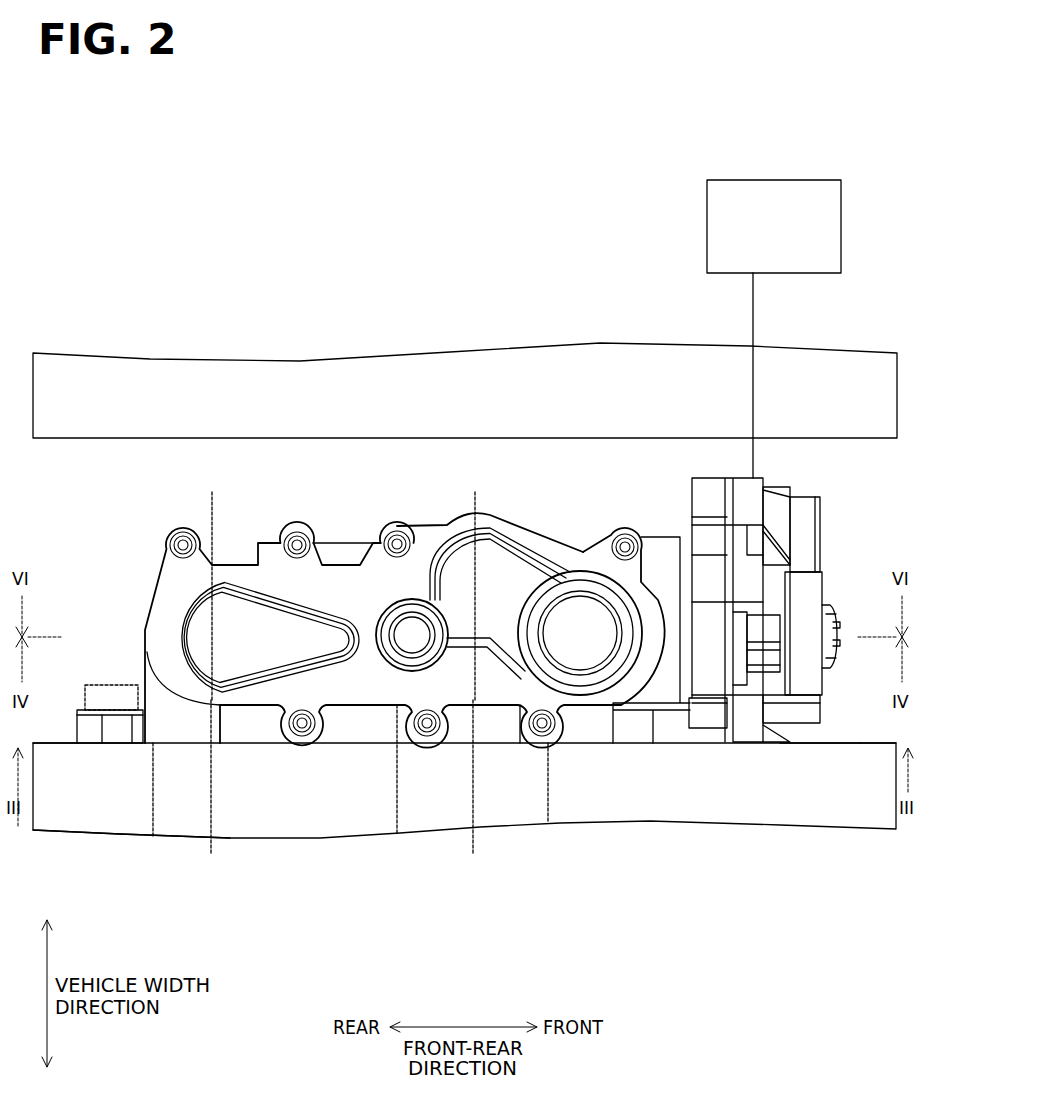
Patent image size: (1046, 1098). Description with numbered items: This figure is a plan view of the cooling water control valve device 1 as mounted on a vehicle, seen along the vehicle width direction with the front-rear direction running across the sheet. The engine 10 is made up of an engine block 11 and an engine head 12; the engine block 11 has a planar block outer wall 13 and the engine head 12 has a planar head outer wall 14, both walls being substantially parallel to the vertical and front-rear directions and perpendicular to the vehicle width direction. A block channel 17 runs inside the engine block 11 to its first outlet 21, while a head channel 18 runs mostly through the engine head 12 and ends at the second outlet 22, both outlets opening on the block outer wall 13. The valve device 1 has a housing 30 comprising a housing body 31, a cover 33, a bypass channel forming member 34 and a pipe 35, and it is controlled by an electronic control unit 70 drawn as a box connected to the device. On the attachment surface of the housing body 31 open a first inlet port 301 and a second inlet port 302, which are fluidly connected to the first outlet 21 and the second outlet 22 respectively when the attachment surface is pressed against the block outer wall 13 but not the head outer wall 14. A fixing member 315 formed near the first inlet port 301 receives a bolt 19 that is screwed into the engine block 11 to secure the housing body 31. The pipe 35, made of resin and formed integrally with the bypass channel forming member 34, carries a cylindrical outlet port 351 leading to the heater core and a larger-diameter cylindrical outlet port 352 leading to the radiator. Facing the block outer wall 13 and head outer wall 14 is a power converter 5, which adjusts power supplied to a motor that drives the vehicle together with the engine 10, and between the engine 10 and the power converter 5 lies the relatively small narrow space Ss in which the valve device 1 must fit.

The cooling water control valve device 1 is at (758, 770).
The power converter 5 is at (78, 420).
The engine 10 is at (127, 817).
The engine block 11 is at (845, 740).
The engine head 12 is at (80, 822).
The block outer wall 13 is at (875, 740).
The head outer wall 14 is at (55, 740).
The block channel 17 is at (168, 830).
The head channel 18 is at (418, 826).
The bolt 19 is at (113, 685).
The first outlet 21 is at (212, 584).
The second outlet 22 is at (477, 584).
The housing 30 is at (345, 532).
The housing body 31 is at (657, 546).
The cover 33 is at (808, 519).
The bypass channel forming member 34 is at (248, 613).
The pipe 35 is at (523, 530).
The first inlet port 301 is at (209, 790).
The second inlet port 302 is at (477, 790).
The fixing member 315 is at (95, 710).
The outlet port 351 is at (410, 635).
The outlet port 352 is at (578, 633).
The electronic control unit 70 is at (770, 192).
The narrow space Ss is at (303, 487).